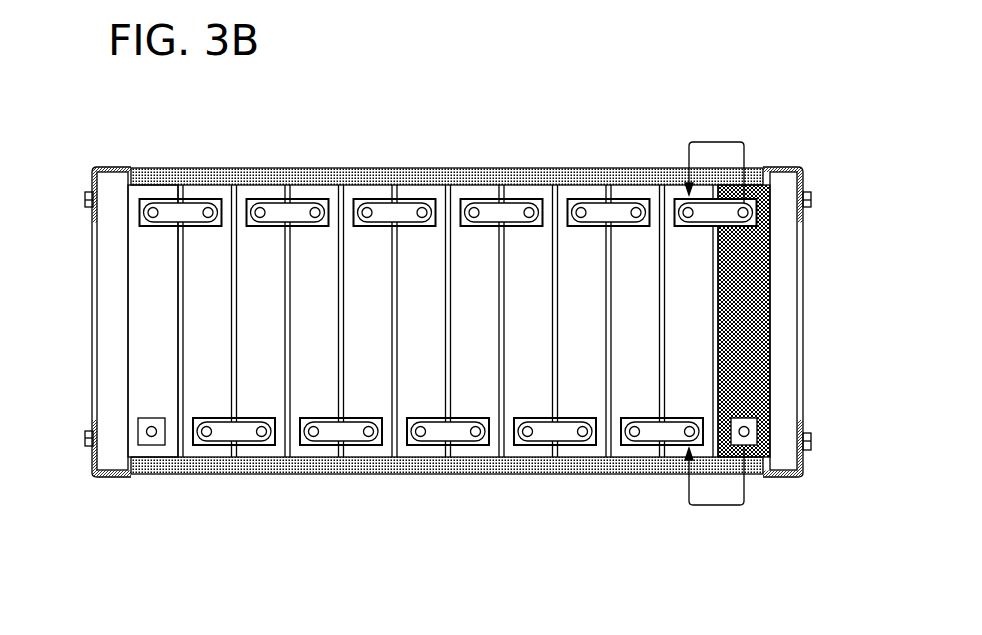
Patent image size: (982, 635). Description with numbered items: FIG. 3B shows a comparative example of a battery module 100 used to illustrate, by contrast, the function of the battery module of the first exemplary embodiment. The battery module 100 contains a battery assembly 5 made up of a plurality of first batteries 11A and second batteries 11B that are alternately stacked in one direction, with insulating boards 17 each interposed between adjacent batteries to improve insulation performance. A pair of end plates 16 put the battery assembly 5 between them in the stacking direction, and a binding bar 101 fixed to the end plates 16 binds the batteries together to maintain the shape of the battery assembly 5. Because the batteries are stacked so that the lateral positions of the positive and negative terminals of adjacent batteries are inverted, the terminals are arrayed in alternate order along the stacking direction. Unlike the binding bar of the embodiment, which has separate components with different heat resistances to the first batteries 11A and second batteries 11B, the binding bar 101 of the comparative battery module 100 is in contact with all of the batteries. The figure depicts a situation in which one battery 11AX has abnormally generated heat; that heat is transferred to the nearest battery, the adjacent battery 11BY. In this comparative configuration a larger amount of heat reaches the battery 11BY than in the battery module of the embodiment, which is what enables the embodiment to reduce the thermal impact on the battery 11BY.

The battery module 100 is at (781, 94).
The binding bar 101 is at (444, 178).
The end plate 16 is at (108, 334).
The insulating board 17 is at (720, 363).
The battery assembly 5 is at (197, 478).
The first battery 11A is at (308, 447).
The second battery 11B is at (252, 447).
The battery 11AX is at (757, 450).
The battery 11BY is at (680, 452).